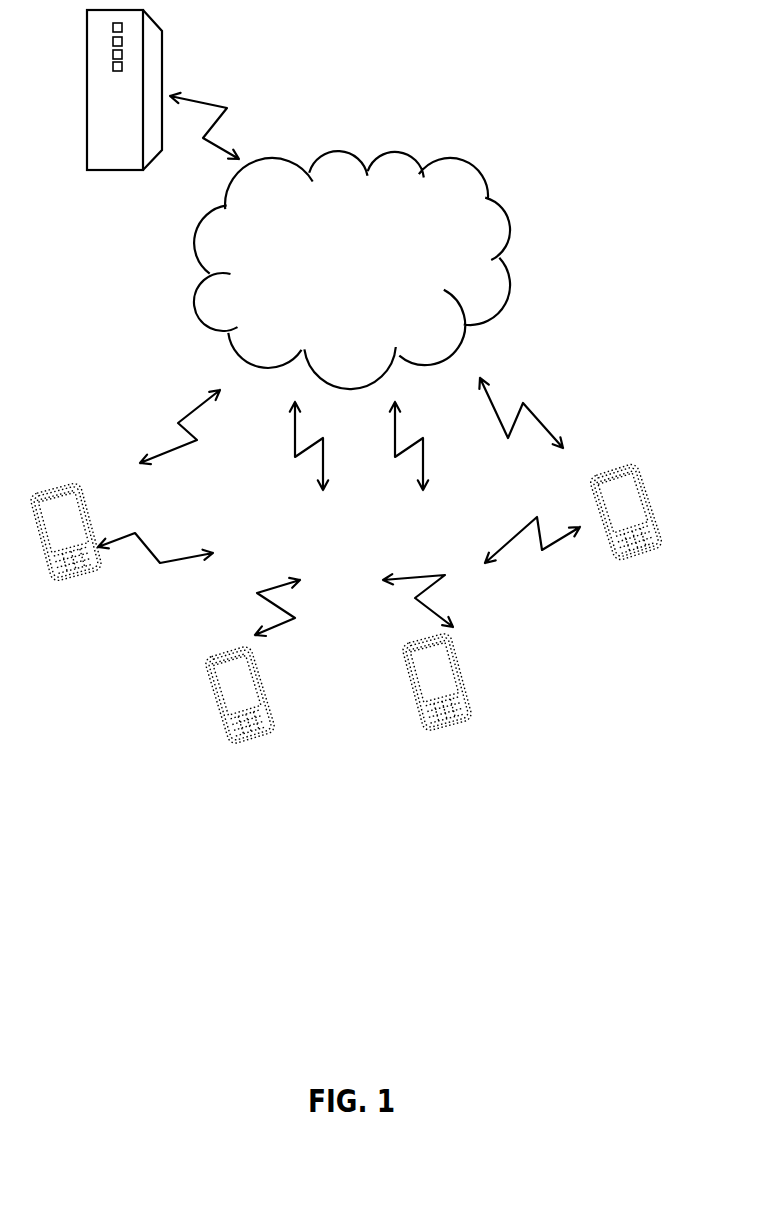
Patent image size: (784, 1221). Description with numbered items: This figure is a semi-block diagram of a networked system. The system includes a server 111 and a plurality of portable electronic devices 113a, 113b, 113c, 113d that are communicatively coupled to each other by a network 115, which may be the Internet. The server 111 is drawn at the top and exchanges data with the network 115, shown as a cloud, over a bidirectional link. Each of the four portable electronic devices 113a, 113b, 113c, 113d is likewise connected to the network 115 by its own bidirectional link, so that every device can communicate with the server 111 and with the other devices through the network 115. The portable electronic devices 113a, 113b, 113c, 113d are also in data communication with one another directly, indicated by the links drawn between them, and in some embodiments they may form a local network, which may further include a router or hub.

The server 111 is at (162, 55).
The network 115 is at (453, 160).
The portable electronic device 113a is at (645, 523).
The portable electronic device 113b is at (433, 728).
The portable electronic device 113c is at (245, 740).
The portable electronic device 113d is at (57, 582).